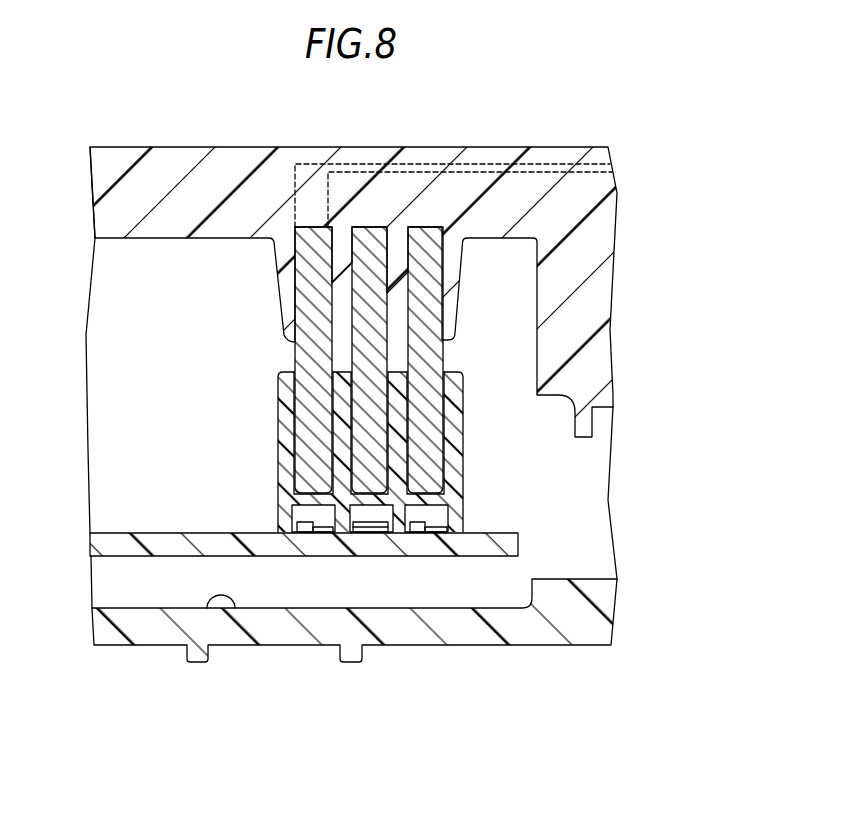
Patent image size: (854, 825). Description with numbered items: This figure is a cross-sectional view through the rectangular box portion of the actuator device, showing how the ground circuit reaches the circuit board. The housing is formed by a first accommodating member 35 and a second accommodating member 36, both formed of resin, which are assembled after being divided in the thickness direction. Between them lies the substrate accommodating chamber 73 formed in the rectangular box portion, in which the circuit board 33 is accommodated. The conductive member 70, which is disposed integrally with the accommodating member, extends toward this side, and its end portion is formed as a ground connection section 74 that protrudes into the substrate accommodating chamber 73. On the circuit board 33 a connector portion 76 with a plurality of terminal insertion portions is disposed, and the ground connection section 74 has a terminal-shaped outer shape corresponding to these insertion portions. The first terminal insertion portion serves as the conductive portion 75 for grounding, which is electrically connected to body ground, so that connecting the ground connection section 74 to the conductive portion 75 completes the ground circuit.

The first accommodating member 35 is at (165, 147).
The conductive member 70 is at (493, 163).
The ground connection section 74 is at (295, 357).
The connector portion 76 is at (462, 405).
The conductive portion for grounding 75 is at (290, 487).
The circuit board 33 is at (517, 533).
The substrate accommodating chamber 73 is at (231, 612).
The second accommodating member 36 is at (558, 645).